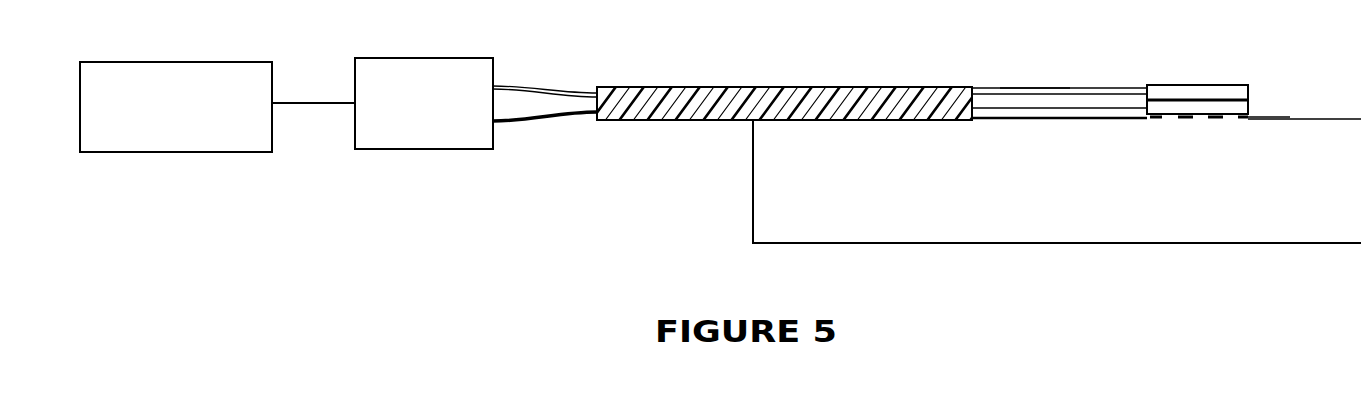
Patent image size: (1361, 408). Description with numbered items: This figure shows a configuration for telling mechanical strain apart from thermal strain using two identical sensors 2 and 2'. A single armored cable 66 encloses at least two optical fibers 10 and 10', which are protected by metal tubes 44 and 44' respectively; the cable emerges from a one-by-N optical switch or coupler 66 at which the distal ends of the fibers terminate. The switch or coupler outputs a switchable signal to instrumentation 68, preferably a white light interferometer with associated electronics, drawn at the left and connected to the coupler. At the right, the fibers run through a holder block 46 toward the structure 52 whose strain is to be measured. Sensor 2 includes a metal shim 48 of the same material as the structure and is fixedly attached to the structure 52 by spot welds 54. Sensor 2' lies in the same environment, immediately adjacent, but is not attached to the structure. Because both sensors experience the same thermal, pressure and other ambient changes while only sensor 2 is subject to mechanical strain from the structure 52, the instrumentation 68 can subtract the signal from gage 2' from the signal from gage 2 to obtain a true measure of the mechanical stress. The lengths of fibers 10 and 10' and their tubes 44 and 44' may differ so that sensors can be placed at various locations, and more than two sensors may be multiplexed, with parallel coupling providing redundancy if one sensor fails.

The instrumentation 68 is at (203, 62).
The 1×N optical switch or coupler 66 is at (407, 58).
The metal tube 44' is at (820, 61).
The metal tube 44 is at (820, 139).
The fiber holder block 46 is at (800, 87).
The structure 52 is at (753, 193).
The optical fiber 10' is at (1015, 59).
The optical fiber 10 is at (981, 142).
The sensor 2' is at (1218, 77).
The sensor 2 is at (1294, 100).
The metal shim 48 is at (1263, 119).
The spot welds 54 is at (1163, 121).